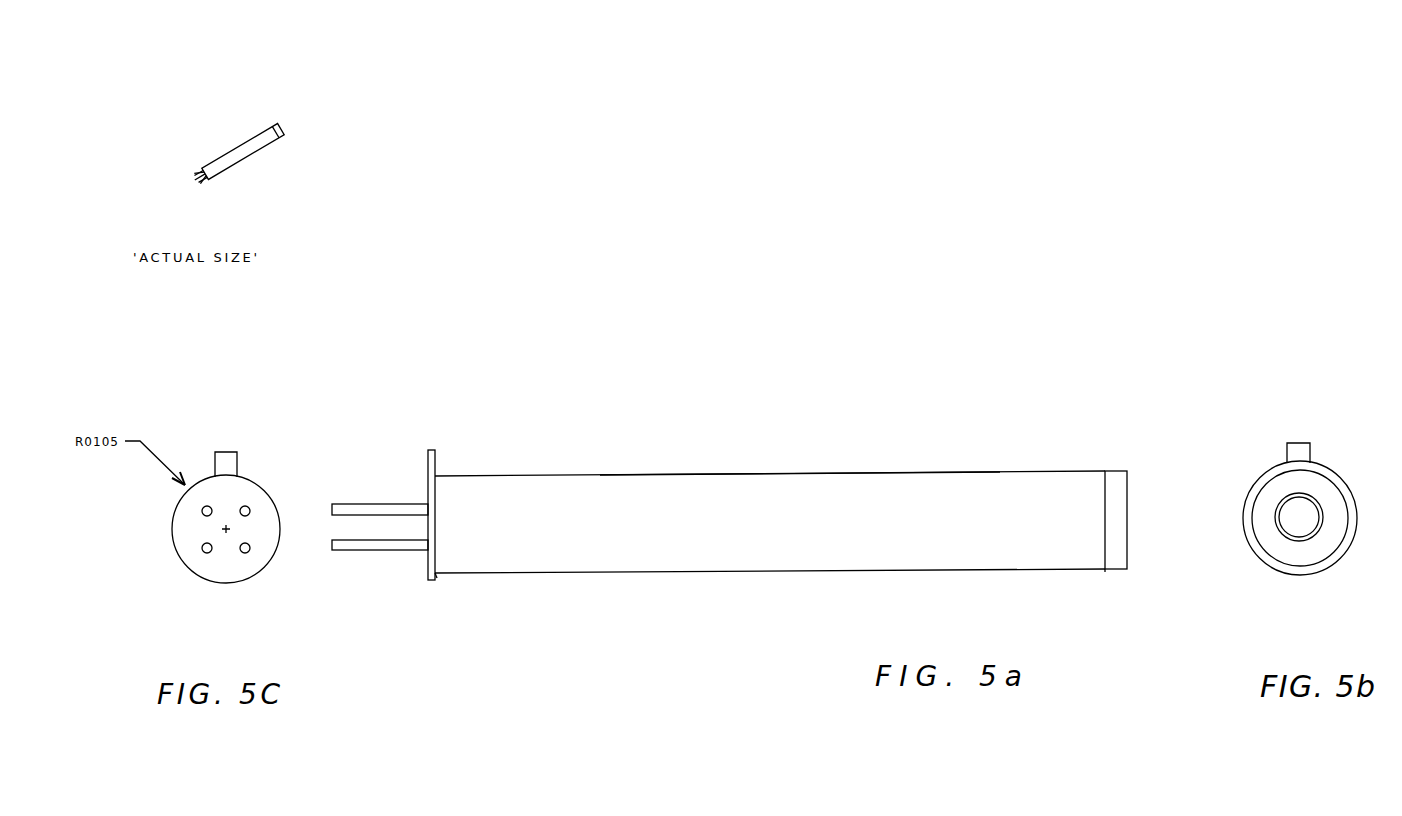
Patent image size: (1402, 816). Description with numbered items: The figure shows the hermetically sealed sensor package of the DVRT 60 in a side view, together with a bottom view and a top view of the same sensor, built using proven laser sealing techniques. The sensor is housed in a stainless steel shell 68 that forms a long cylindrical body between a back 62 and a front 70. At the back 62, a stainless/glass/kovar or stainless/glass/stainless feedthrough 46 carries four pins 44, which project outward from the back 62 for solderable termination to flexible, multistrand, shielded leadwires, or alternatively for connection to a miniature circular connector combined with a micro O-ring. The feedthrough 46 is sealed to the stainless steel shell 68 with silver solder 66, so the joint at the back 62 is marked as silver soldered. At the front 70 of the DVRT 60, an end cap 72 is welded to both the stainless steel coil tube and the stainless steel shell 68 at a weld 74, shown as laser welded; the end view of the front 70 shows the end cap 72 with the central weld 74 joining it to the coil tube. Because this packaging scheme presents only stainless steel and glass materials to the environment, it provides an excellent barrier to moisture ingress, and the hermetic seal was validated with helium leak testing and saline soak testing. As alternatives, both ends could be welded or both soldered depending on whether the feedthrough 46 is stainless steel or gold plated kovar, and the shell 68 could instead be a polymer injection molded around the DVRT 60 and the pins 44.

In FIG. 5a, the DVRT 60 is at (240, 125).
In FIG. 5a, the back 62 is at (413, 468).
In FIG. 5c, the back 62 is at (222, 572).
In FIG. 5a, the pins 44 is at (350, 547).
In FIG. 5a, the feedthrough 46 is at (430, 571).
In FIG. 5a, the silver solder 66 is at (437, 578).
In FIG. 5a, the stainless steel shell 68 is at (808, 547).
In FIG. 5b, the front 70 is at (1322, 545).
In FIG. 5a, the end cap 72 is at (1122, 497).
In FIG. 5a, the weld 74 is at (1103, 571).
In FIG. 5b, the weld 74 is at (1288, 492).